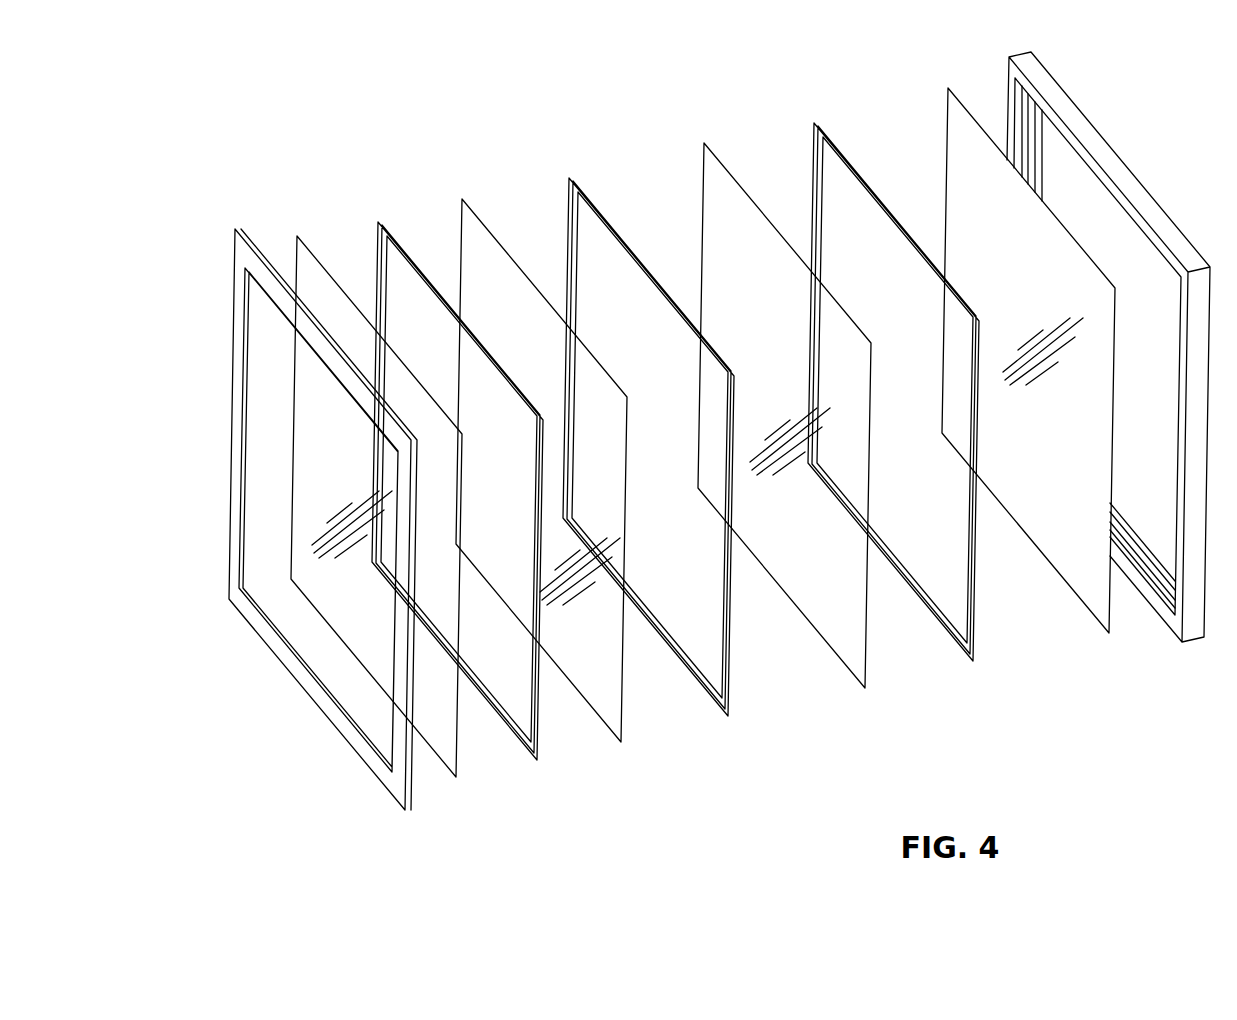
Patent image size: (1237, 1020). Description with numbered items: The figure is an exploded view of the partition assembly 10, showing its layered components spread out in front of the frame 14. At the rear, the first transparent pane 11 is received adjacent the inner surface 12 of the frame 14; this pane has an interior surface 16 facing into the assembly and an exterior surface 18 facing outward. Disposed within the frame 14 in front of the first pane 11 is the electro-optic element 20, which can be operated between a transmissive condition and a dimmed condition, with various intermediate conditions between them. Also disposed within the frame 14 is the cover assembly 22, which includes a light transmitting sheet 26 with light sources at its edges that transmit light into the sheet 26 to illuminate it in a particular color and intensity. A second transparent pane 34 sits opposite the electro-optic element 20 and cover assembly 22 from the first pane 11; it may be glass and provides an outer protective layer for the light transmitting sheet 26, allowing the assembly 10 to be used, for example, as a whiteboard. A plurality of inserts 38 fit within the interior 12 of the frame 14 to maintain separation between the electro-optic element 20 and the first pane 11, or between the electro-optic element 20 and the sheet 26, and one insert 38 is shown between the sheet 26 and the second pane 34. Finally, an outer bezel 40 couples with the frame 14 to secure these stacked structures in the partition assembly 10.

The partition assembly 10 is at (1068, 42).
The first transparent pane 11 is at (1028, 360).
The inner surface 12 is at (1032, 145).
The frame 14 is at (1042, 80).
The interior surface 16 is at (1028, 360).
The exterior surface 18 is at (1122, 377).
The electro-optic element 20 is at (832, 638).
The cover assembly 22 is at (541, 506).
The light transmitting sheet 26 is at (602, 708).
The second transparent pane 34 is at (445, 757).
The inserts 38 is at (380, 237).
The outer bezel 40 is at (238, 250).